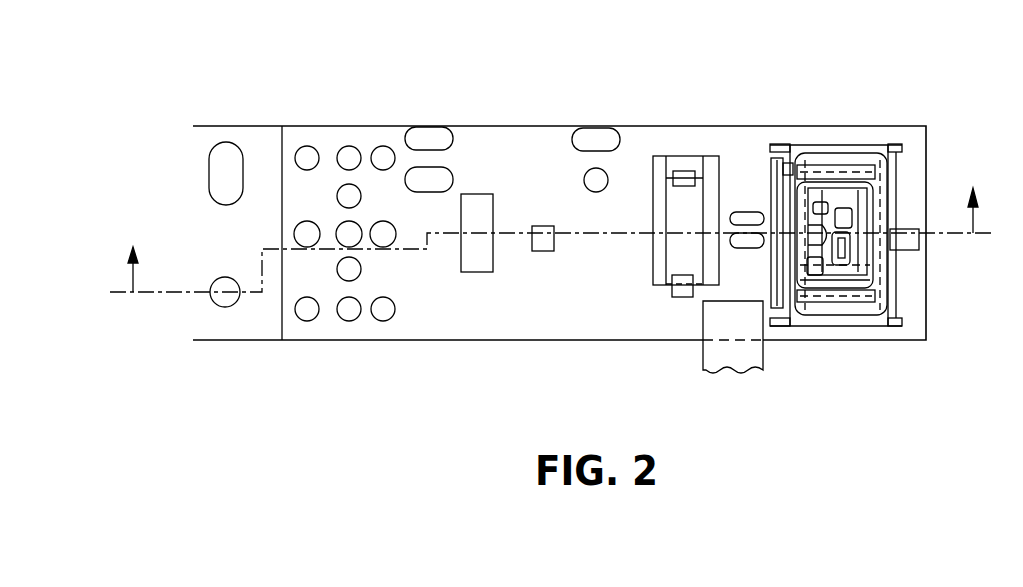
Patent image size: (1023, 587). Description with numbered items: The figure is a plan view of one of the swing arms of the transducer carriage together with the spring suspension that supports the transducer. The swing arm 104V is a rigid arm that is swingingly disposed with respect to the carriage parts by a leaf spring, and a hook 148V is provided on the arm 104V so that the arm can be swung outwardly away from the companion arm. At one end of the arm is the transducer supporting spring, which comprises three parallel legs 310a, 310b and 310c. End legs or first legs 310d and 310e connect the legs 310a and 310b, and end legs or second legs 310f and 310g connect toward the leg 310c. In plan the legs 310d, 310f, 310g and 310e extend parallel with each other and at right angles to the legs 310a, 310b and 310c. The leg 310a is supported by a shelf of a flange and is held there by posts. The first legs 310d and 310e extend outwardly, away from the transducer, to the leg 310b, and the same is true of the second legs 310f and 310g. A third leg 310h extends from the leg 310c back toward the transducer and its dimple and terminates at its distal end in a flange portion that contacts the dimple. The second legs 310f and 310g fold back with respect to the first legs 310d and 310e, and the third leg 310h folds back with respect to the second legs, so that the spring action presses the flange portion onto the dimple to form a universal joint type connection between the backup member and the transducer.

The swing arm 104V is at (510, 126).
The hook 148V is at (730, 370).
The parallel leg 310a is at (782, 187).
The parallel leg 310b is at (880, 186).
The parallel leg 310c is at (792, 200).
The first leg 310d is at (834, 168).
The first leg 310e is at (833, 302).
The second leg 310f is at (850, 188).
The second leg 310g is at (850, 285).
The third leg 310h is at (818, 242).